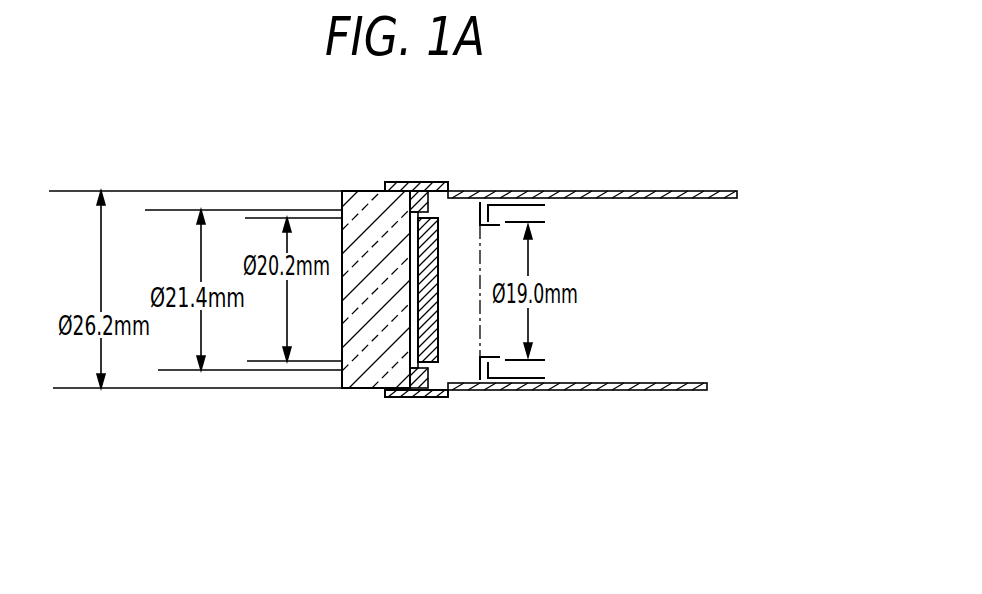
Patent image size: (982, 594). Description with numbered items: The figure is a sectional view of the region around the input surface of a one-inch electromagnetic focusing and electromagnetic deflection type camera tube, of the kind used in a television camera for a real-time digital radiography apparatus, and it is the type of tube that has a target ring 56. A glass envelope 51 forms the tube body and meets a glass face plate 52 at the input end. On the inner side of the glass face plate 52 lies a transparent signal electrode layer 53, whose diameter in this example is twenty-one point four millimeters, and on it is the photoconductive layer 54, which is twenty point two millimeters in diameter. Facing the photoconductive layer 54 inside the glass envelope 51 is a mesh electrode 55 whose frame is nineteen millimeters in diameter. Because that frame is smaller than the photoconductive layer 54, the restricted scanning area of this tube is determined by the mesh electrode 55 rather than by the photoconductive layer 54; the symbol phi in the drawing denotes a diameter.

The glass envelope 51 is at (616, 390).
The glass face plate 52 is at (355, 390).
The transparent signal electrode layer 53 is at (442, 372).
The photoconductive layer 54 is at (438, 333).
The mesh electrode 55 is at (528, 197).
The target ring 56 is at (400, 182).